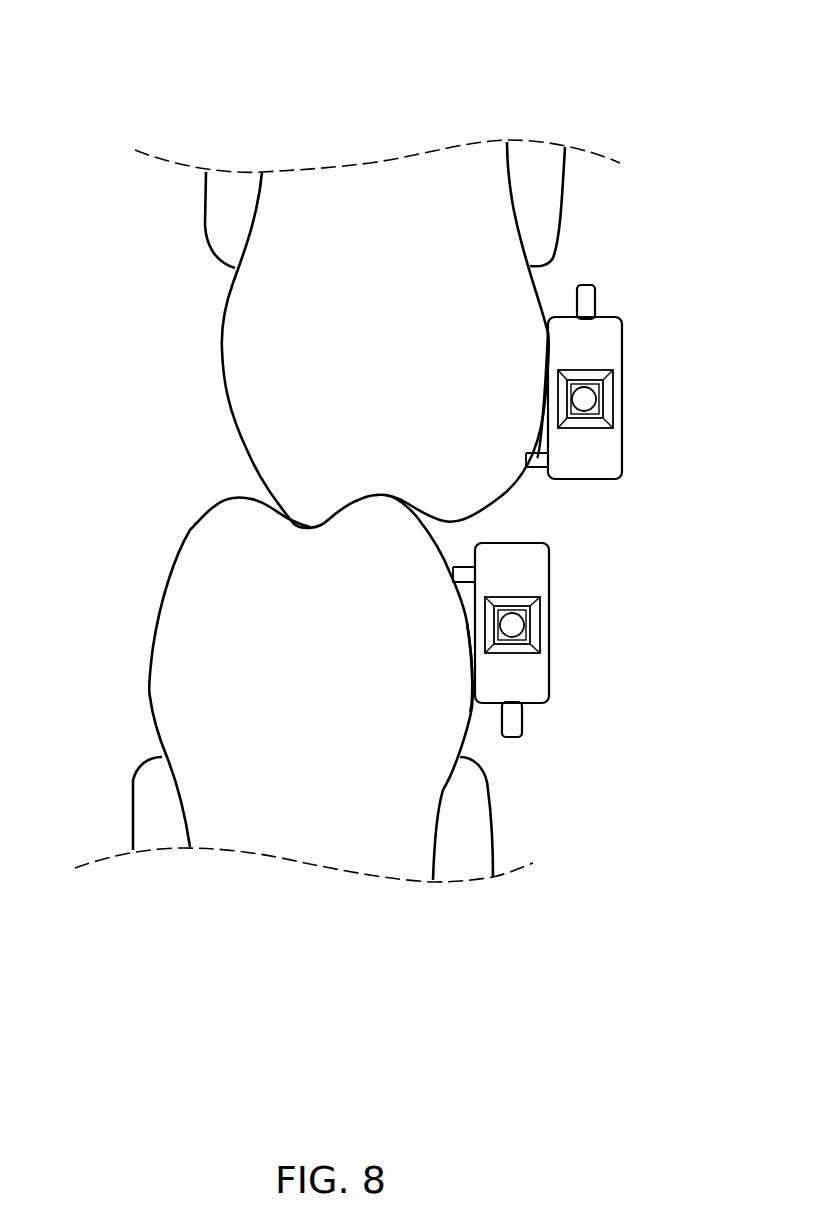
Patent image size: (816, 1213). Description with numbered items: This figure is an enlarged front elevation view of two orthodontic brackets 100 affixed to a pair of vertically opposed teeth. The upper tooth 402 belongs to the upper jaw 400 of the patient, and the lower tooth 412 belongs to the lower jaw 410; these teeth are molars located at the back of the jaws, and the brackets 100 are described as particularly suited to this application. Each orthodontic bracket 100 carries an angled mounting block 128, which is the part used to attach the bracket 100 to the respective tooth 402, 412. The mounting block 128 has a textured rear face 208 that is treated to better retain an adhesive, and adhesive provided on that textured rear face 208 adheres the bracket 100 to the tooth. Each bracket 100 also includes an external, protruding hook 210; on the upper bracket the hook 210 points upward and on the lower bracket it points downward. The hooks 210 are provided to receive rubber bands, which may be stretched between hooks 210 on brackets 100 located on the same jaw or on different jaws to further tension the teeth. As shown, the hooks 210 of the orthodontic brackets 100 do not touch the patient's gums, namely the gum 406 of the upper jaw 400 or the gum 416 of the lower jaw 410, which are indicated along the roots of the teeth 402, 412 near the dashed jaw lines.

The orthodontic bracket 100 is at (622, 350).
The angled mounting block 128 is at (537, 458).
The textured rear face 208 is at (540, 388).
The hook 210 is at (597, 300).
The upper jaw 400 is at (385, 158).
The tooth 402 is at (220, 352).
The gum 406 is at (551, 196).
The lower jaw 410 is at (318, 863).
The tooth 412 is at (150, 647).
The gum 416 is at (472, 822).